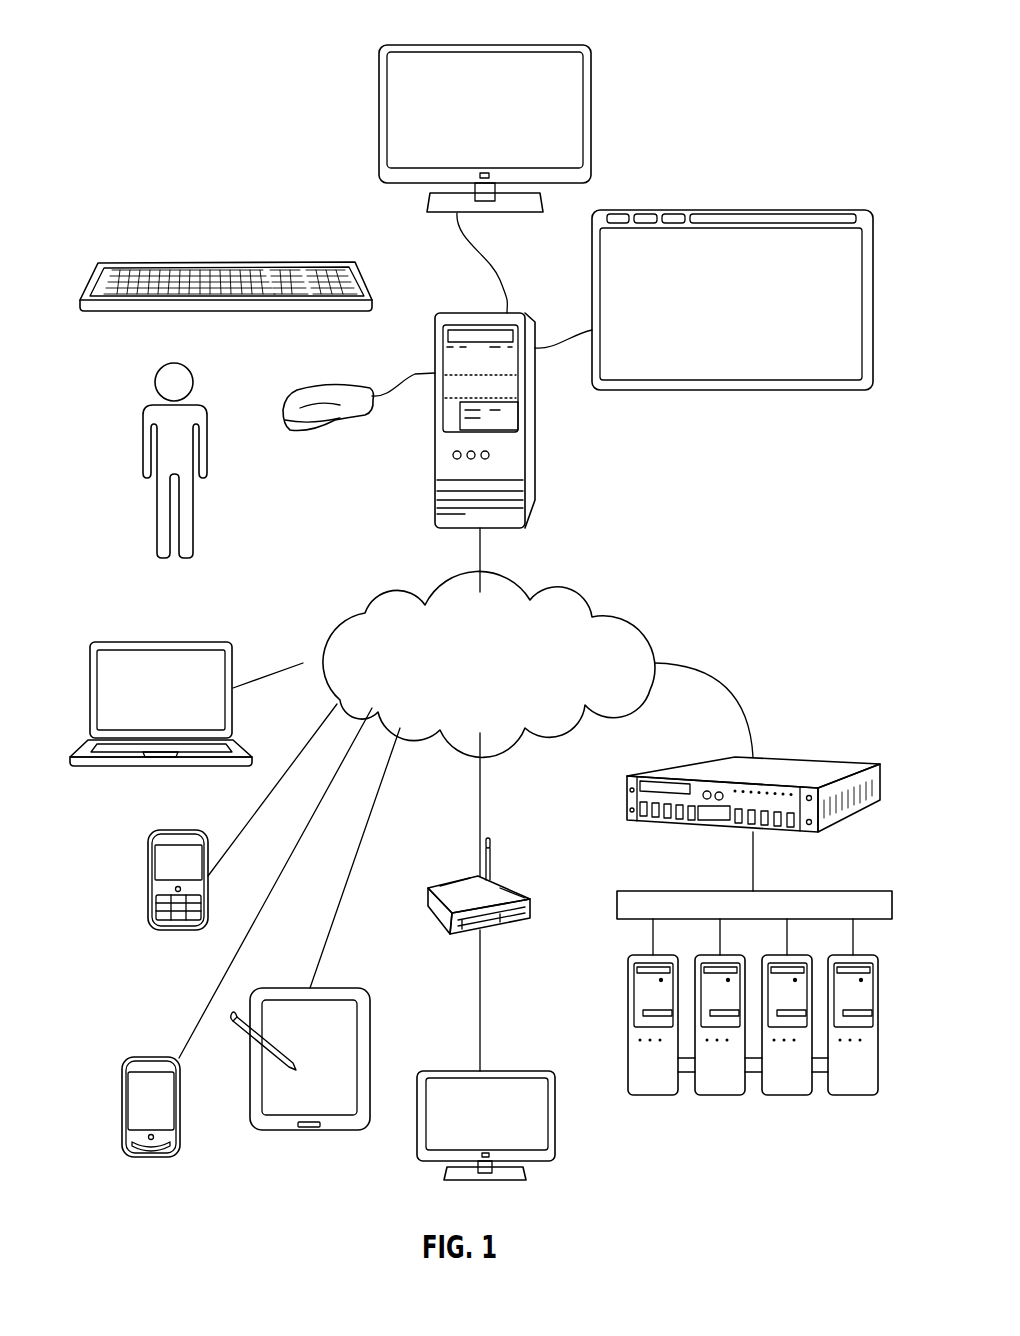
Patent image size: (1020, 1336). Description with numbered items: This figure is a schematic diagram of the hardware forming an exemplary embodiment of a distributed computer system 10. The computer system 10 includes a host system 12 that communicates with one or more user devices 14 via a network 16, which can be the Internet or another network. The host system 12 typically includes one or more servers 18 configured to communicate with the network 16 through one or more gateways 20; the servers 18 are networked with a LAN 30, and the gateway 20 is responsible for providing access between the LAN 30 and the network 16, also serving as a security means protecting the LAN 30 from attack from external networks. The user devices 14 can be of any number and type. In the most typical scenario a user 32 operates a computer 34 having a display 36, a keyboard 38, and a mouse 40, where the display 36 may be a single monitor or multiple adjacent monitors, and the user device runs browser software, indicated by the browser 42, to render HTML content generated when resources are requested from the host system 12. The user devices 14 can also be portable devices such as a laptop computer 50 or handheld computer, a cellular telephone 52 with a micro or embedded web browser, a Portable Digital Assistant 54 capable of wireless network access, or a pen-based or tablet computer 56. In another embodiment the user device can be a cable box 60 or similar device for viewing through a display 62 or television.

The computer system 10 is at (287, 183).
The host system 12 is at (773, 648).
The user devices 14 is at (130, 959).
The network 16 is at (393, 598).
The servers 18 is at (787, 1097).
The gateway 20 is at (817, 776).
The LAN 30 is at (825, 890).
The user 32 is at (141, 472).
The computer 34 is at (435, 446).
The display 36 is at (549, 45).
The keyboard 38 is at (125, 263).
The mouse 40 is at (318, 383).
The browser 42 is at (818, 208).
The laptop computer 50 is at (118, 642).
The cellular telephone 52 is at (178, 830).
The Portable Digital Assistant 54 is at (150, 1057).
The tablet computer 56 is at (338, 988).
The cable box 60 is at (512, 882).
The display 62 is at (522, 1073).